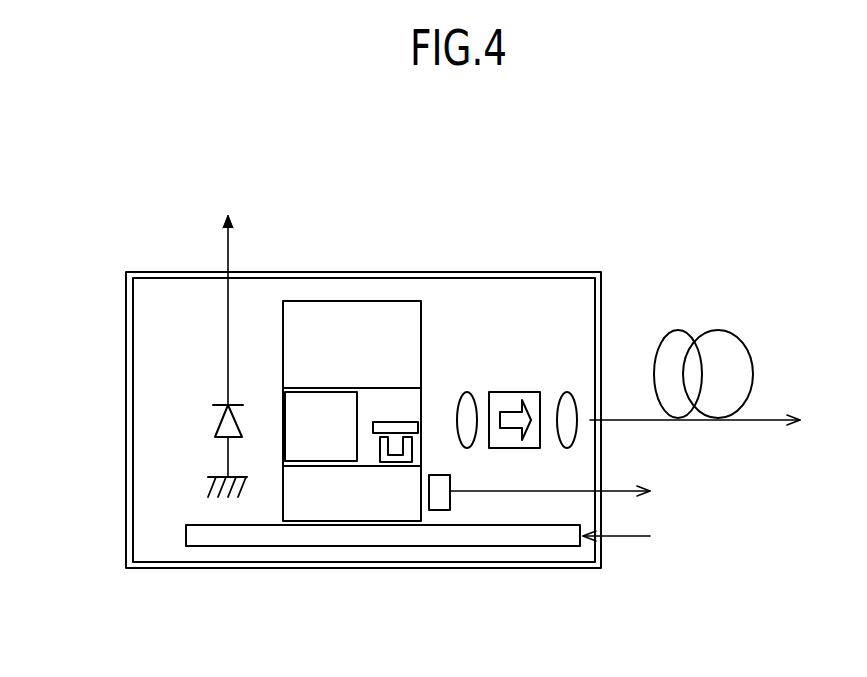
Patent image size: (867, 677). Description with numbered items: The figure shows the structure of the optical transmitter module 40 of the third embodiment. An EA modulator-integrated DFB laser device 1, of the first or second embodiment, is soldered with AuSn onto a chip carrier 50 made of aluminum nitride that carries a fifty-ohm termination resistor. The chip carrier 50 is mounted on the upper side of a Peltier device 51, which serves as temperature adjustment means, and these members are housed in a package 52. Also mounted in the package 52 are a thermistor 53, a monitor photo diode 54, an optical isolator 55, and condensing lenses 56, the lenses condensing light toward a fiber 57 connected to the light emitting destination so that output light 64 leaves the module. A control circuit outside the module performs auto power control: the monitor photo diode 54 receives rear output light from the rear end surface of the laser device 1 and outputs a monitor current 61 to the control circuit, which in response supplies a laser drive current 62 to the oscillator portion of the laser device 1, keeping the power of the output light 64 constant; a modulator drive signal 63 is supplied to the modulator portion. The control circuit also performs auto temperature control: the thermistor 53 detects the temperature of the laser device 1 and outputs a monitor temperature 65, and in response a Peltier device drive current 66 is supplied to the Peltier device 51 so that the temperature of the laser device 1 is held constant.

The optical transmitter module 40 is at (472, 176).
The package 52 is at (540, 271).
The chip carrier 50 is at (313, 500).
The EA modulator-integrated DFB laser device 1 is at (367, 453).
The laser drive current 62 is at (323, 390).
The modulator drive signal 63 is at (393, 412).
The monitor current 61 is at (227, 295).
The monitor photo diode 54 is at (216, 425).
The condensing lenses 56 is at (567, 392).
The optical isolator 55 is at (514, 449).
The output light 64 is at (713, 420).
The fiber 57 is at (716, 329).
The thermistor 53 is at (440, 511).
The monitor temperature 65 is at (568, 494).
The Peltier device 51 is at (517, 533).
The Peltier device drive current 66 is at (634, 539).